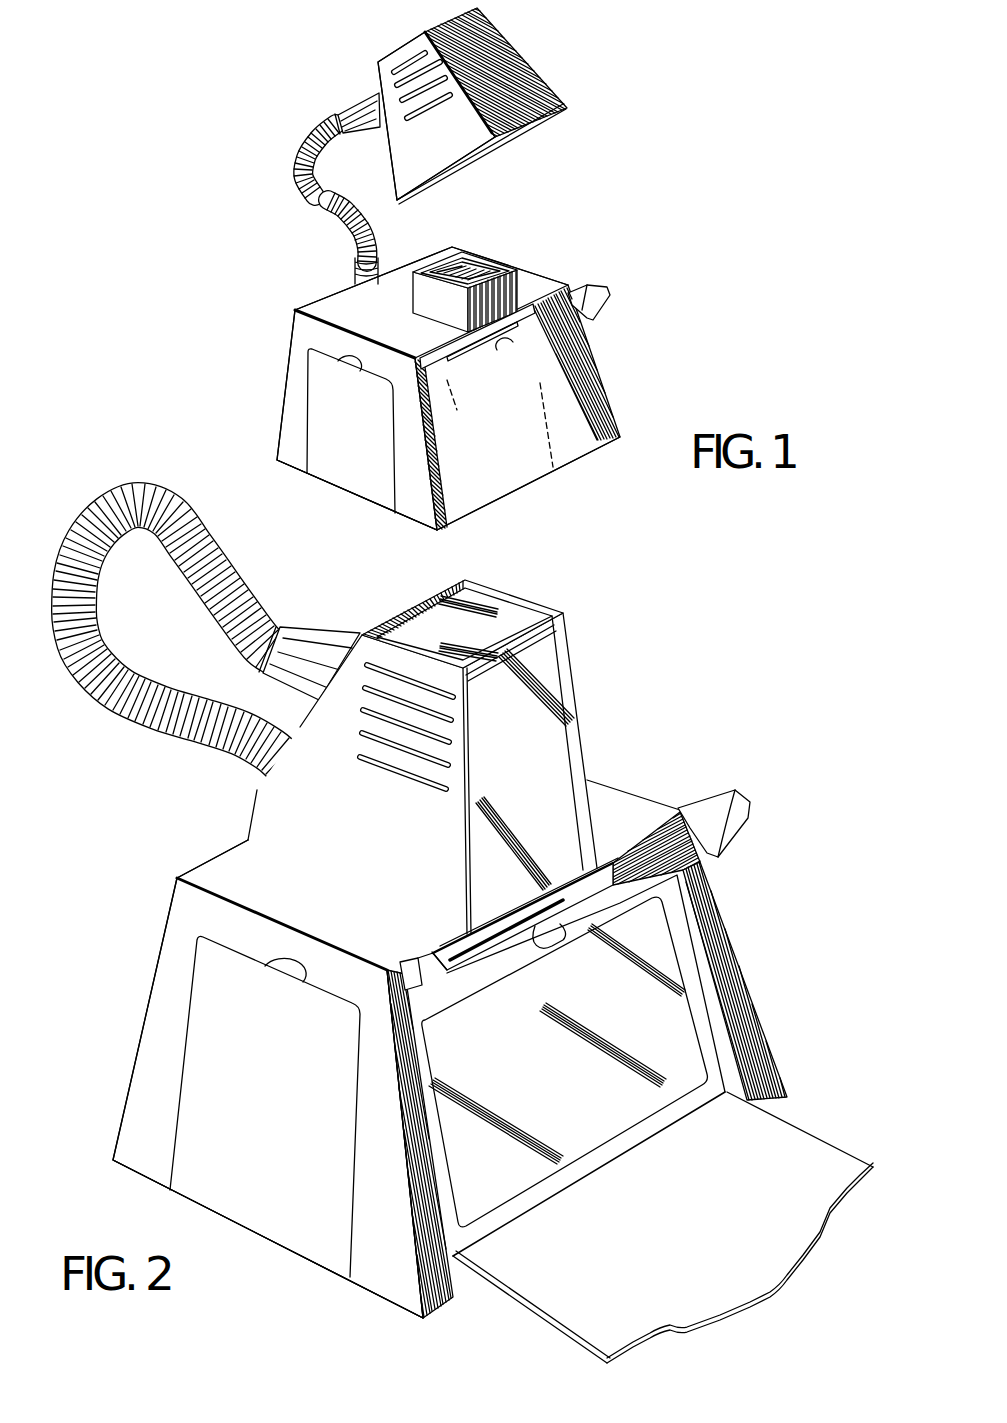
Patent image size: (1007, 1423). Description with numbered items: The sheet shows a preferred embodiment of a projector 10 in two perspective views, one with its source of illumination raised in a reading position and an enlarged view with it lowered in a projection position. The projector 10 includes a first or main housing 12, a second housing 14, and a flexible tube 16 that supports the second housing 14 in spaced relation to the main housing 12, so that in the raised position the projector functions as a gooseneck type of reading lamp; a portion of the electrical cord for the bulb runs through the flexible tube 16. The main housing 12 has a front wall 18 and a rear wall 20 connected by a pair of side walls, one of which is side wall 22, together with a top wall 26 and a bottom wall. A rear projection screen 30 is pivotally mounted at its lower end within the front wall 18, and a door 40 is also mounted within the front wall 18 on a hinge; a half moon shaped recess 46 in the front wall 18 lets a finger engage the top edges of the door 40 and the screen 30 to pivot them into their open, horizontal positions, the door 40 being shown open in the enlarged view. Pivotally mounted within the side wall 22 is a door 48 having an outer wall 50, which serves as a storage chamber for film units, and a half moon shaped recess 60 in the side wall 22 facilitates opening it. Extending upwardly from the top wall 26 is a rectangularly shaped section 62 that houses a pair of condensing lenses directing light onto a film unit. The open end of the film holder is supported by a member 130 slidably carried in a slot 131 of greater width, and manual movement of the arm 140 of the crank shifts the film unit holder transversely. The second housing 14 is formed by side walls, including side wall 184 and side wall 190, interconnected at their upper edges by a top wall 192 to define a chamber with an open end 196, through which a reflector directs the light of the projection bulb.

In FIG. 1, the projector 10 is at (439, 279).
In FIG. 1, the first or main housing 12 is at (421, 384).
In FIG. 1, the second housing 14 is at (443, 146).
In FIG. 2, the second housing 14 is at (466, 751).
In FIG. 1, the flexible tube 16 is at (303, 172).
In FIG. 2, the flexible tube 16 is at (100, 718).
In FIG. 1, the front wall 18 is at (593, 367).
In FIG. 2, the front wall 18 is at (728, 970).
In FIG. 1, the rear wall 20 is at (292, 337).
In FIG. 2, the rear wall 20 is at (366, 1056).
In FIG. 1, the side wall 22 is at (427, 517).
In FIG. 2, the side wall 22 is at (382, 1285).
In FIG. 1, the top wall 26 is at (348, 298).
In FIG. 2, the top wall 26 is at (200, 873).
In FIG. 2, the rear projection screen 30 is at (592, 1079).
In FIG. 1, the door 40 is at (580, 407).
In FIG. 2, the door 40 is at (557, 1305).
In FIG. 1, the half moon shaped recess 46 is at (510, 350).
In FIG. 2, the half moon shaped recess 46 is at (509, 965).
In FIG. 1, the door 48 is at (310, 494).
In FIG. 2, the door 48 is at (222, 997).
In FIG. 1, the outer wall 50 is at (363, 431).
In FIG. 2, the outer wall 50 is at (283, 1112).
In FIG. 1, the half moon shaped recess 60 is at (308, 350).
In FIG. 2, the half moon shaped recess 60 is at (267, 956).
In FIG. 1, the rectangularly shaped section 62 is at (438, 303).
In FIG. 2, the member 130 is at (525, 944).
In FIG. 2, the slot 131 is at (443, 980).
In FIG. 1, the arm 140 is at (597, 280).
In FIG. 2, the arm 140 is at (717, 805).
In FIG. 1, the side wall 184 is at (427, 167).
In FIG. 2, the side wall 184 is at (350, 872).
In FIG. 1, the side wall 190 is at (513, 77).
In FIG. 2, the side wall 190 is at (557, 802).
In FIG. 1, the top wall 192 is at (397, 50).
In FIG. 2, the top wall 192 is at (437, 627).
In FIG. 1, the open end 196 is at (527, 125).